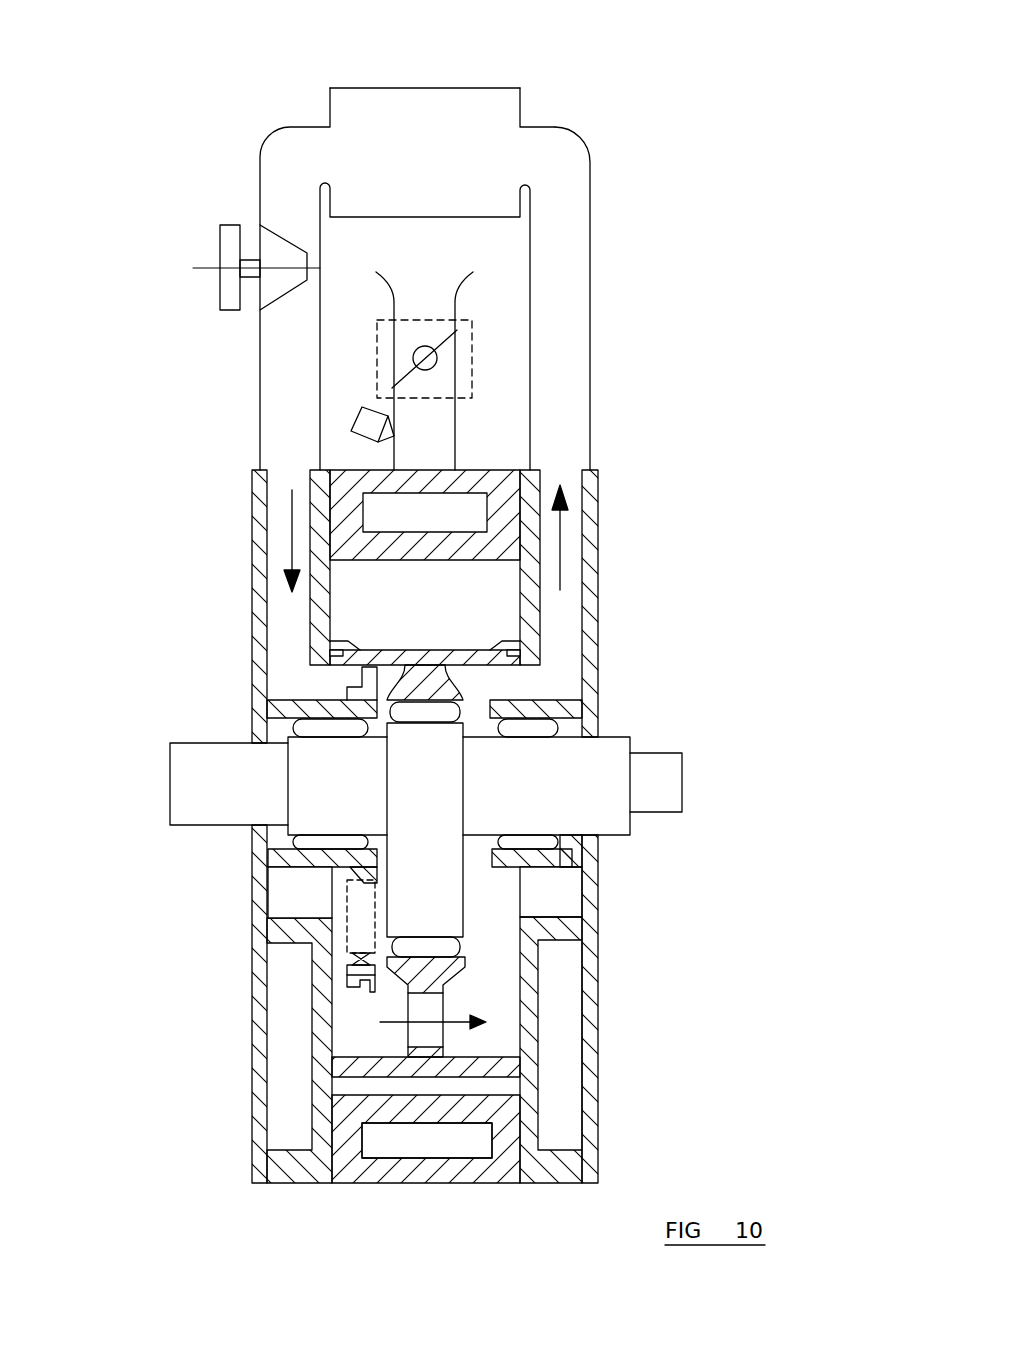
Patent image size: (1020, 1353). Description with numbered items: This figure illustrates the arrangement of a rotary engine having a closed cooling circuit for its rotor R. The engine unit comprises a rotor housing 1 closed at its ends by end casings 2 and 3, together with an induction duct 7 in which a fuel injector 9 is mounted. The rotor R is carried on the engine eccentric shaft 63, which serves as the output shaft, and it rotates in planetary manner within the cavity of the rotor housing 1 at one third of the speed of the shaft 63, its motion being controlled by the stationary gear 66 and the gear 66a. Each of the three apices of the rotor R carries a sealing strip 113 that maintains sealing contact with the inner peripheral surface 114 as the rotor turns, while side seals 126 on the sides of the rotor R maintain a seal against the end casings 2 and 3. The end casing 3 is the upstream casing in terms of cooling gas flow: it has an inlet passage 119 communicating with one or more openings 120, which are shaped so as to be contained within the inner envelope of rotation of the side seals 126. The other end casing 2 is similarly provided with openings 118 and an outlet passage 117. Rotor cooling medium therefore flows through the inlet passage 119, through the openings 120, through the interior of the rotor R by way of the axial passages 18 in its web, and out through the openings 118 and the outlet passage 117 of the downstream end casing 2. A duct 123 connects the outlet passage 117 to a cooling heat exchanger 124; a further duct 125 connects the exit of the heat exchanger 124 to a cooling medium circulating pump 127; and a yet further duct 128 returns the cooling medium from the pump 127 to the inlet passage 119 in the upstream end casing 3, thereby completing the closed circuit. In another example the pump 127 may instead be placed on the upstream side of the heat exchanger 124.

The rotor housing 1 is at (353, 1173).
The end casing 2 is at (598, 1170).
The end casing 3 is at (252, 1170).
The induction duct 7 is at (393, 306).
The fuel injector 9 is at (355, 420).
The axial passages 18 is at (427, 1005).
The engine eccentric shaft 63 is at (600, 798).
The stationary gear 66 is at (357, 882).
The gear 66a is at (362, 973).
The sealing strip 113 is at (432, 1087).
The inner peripheral surface 114 is at (428, 562).
The outlet passage 117 is at (567, 523).
The openings 118 is at (523, 683).
The inlet passage 119 is at (278, 560).
The openings 120 is at (313, 690).
The duct 123 is at (590, 233).
The cooling heat exchanger 124 is at (450, 88).
The further duct 125 is at (262, 148).
The side seals 126 is at (513, 642).
The cooling medium circulating pump 127 is at (223, 242).
The yet further duct 128 is at (260, 362).
The rotor R is at (468, 965).